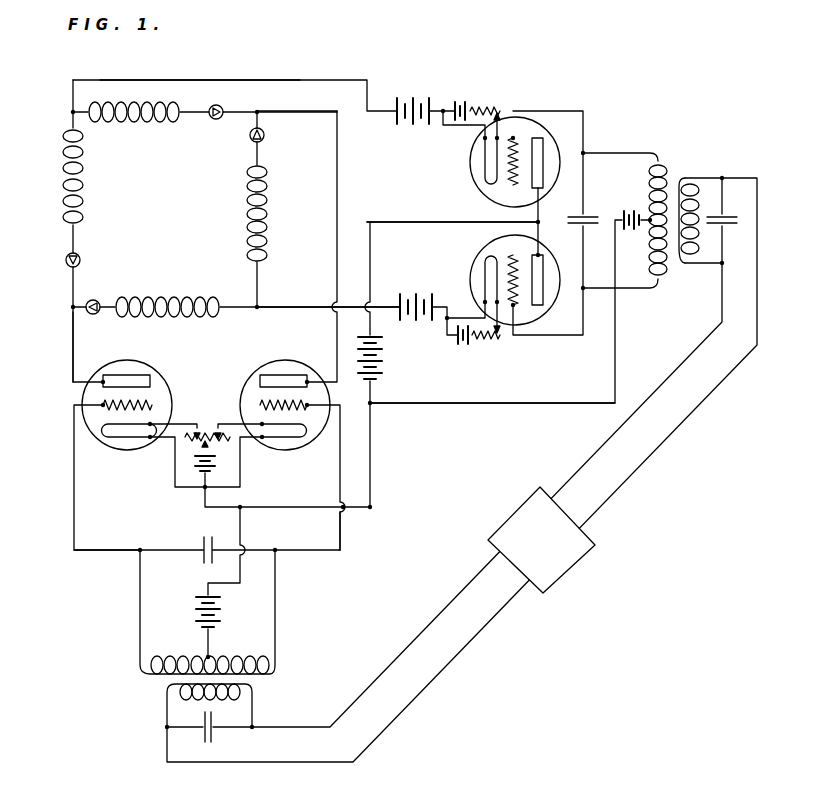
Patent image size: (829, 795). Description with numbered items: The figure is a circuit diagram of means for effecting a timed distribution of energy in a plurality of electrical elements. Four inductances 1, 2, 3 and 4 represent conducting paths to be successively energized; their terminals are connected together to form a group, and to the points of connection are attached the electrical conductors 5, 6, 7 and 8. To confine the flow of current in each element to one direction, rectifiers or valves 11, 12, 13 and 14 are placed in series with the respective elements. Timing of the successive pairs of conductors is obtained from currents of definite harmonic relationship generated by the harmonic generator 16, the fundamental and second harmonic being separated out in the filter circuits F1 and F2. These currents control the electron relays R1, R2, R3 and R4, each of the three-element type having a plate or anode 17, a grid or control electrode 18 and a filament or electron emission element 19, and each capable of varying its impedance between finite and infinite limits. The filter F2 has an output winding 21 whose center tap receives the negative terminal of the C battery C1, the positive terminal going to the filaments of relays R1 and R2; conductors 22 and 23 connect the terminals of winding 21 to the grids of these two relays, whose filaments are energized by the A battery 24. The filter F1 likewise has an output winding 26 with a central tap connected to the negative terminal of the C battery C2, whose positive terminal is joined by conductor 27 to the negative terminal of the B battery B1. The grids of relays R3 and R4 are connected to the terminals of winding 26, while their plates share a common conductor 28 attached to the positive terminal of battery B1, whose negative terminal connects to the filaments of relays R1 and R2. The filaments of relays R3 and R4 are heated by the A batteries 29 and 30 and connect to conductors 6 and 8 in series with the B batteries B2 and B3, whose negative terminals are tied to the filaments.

The inductance 1 is at (163, 298).
The inductance 2 is at (267, 203).
The inductance 3 is at (83, 178).
The inductance 4 is at (163, 120).
The electrical conductor 5 is at (72, 345).
The electrical conductor 6 is at (290, 309).
The electrical conductor 7 is at (282, 112).
The electrical conductor 8 is at (240, 80).
The rectifier or valve 11 is at (94, 300).
The rectifier or valve 12 is at (264, 137).
The rectifier or valve 13 is at (80, 256).
The rectifier or valve 14 is at (216, 119).
The harmonic generator 16 is at (556, 568).
The plate or anode 17 is at (150, 380).
The grid or control electrode 18 is at (150, 404).
The filament or electron emission element 19 is at (128, 440).
The output winding 21 is at (165, 660).
The conductor 22 is at (108, 552).
The conductor 23 is at (342, 533).
The A battery 24 is at (218, 465).
The output winding 26 is at (648, 177).
The conductor 27 is at (440, 403).
The common conductor 28 is at (427, 222).
The A battery 29 is at (468, 345).
The A battery 30 is at (463, 101).
The B battery B1 is at (384, 358).
The B battery B2 is at (420, 294).
The B battery B3 is at (410, 98).
The C battery C1 is at (196, 609).
The C battery C2 is at (624, 210).
The filter circuit F1 is at (690, 172).
The filter circuit F2 is at (166, 681).
The relay R1 is at (95, 438).
The relay R2 is at (265, 366).
The relay R3 is at (478, 242).
The relay R4 is at (471, 152).